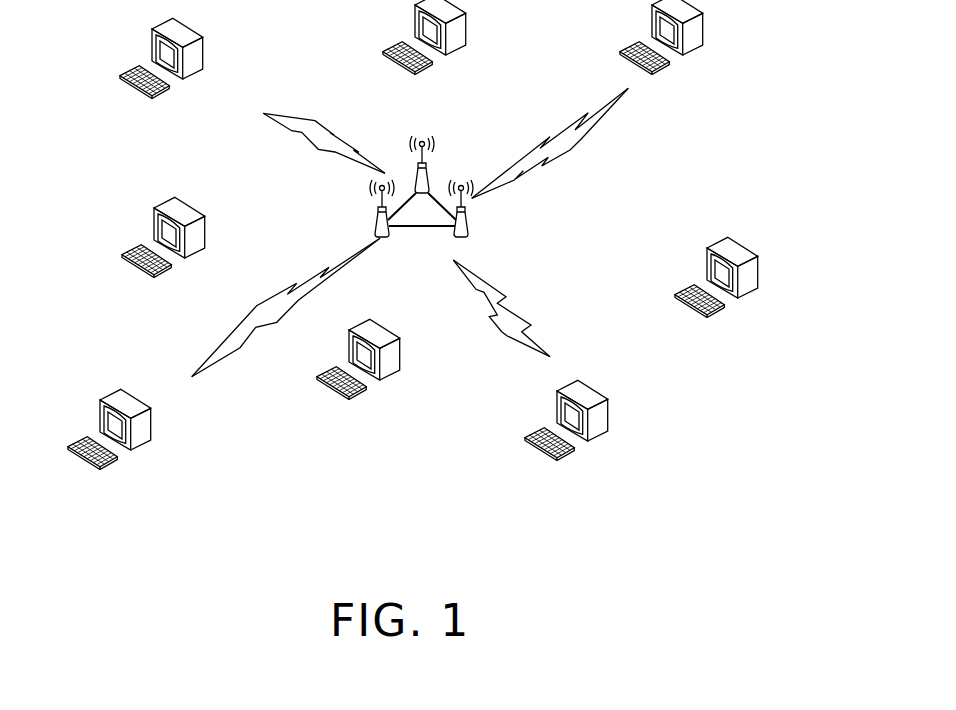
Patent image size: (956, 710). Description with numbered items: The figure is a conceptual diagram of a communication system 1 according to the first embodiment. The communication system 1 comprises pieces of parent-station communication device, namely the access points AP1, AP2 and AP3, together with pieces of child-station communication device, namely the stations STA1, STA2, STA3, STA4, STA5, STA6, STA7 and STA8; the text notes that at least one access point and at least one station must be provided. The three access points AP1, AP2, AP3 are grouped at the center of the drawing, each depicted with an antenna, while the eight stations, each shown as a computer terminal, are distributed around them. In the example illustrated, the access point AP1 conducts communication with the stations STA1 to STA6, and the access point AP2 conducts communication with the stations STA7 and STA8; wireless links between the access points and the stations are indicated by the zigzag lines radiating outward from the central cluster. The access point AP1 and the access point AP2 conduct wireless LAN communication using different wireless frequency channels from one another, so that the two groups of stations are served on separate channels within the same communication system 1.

The communication system 1 is at (430, 269).
The access point AP1 is at (376, 222).
The access point AP2 is at (469, 226).
The access point AP3 is at (430, 173).
The station STA1 is at (442, 40).
The station STA2 is at (179, 61).
The station STA3 is at (181, 240).
The station STA4 is at (376, 362).
The station STA5 is at (584, 423).
The station STA6 is at (734, 280).
The station STA7 is at (679, 40).
The station STA8 is at (127, 432).